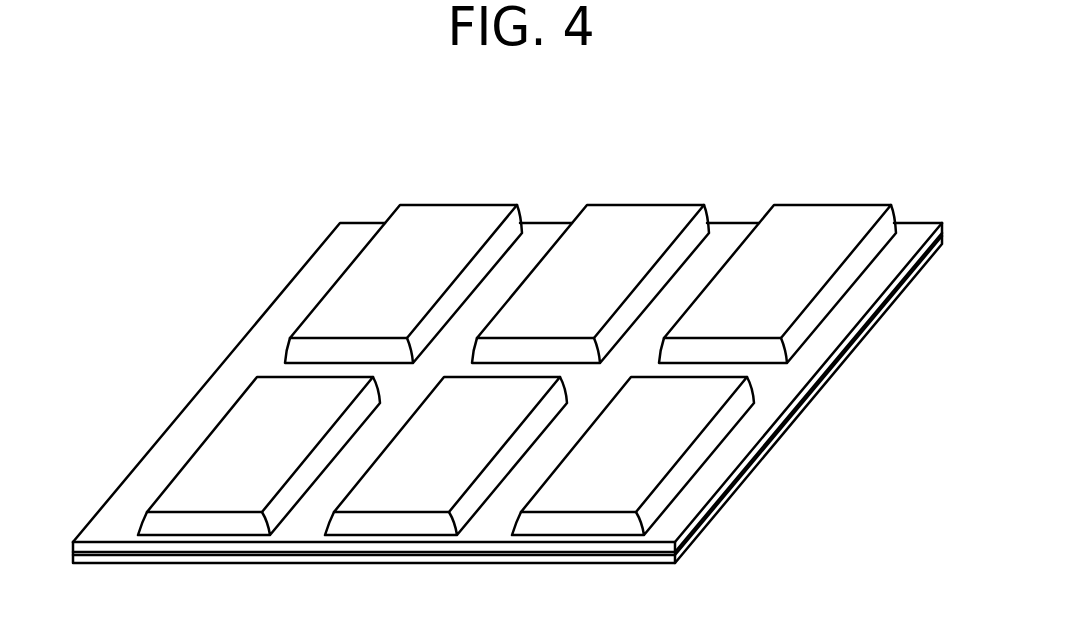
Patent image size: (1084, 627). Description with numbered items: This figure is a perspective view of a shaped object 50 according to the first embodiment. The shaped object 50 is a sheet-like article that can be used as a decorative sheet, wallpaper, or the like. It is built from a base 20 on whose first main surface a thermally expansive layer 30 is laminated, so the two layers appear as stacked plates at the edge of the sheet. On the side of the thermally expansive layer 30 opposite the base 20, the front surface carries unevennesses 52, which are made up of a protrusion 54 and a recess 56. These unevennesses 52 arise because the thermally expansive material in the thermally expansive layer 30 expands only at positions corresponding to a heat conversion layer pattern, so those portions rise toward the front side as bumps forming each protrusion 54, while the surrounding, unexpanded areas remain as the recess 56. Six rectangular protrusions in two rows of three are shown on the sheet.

The shaped object 50 is at (803, 153).
The unevennesses 52 is at (558, 137).
The protrusion 54 is at (484, 207).
The recess 56 is at (535, 253).
The thermally expansive layer 30 is at (800, 392).
The base 20 is at (733, 493).